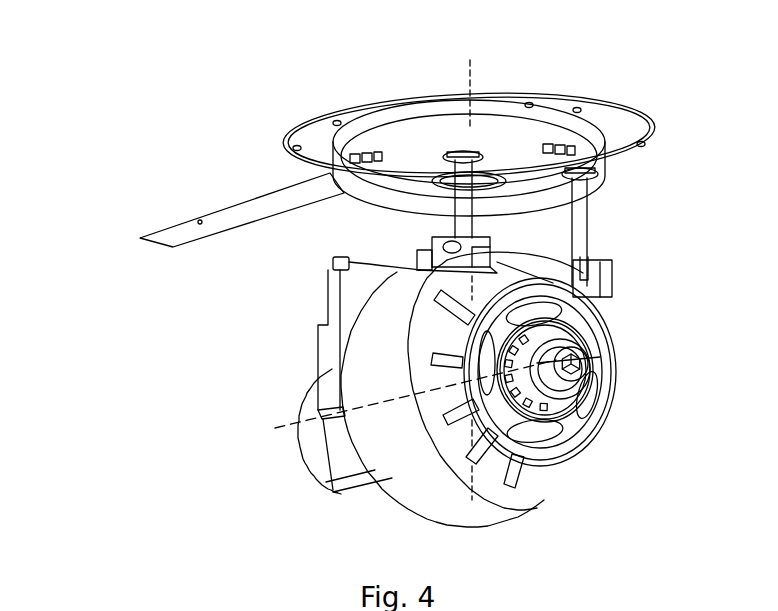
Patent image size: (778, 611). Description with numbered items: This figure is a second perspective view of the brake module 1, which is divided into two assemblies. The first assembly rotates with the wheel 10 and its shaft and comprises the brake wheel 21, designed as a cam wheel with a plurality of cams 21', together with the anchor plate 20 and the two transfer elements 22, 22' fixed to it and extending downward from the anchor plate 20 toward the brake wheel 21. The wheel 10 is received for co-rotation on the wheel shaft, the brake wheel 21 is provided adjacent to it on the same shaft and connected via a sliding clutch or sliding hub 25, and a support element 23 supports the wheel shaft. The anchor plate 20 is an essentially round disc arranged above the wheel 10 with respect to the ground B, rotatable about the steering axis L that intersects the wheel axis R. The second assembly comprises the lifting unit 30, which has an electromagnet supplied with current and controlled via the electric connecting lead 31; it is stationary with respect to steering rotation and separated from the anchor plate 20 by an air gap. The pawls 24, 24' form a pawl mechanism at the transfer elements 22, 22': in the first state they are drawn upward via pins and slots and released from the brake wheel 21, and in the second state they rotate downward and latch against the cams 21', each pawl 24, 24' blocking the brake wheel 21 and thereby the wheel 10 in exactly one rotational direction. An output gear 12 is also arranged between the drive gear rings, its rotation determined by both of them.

The brake module 1 is at (62, 71).
The wheel 10 is at (578, 460).
The output gear 12 is at (313, 464).
The anchor plate 20 is at (372, 202).
The brake wheel 21 is at (569, 377).
The cams 21' is at (590, 370).
The transfer element 22 is at (430, 153).
The transfer element 22' is at (615, 227).
The support element 23 is at (333, 290).
The pawl 24 is at (485, 254).
The pawl 24' is at (620, 270).
The sliding hub 25 is at (603, 376).
The lifting unit 30 is at (300, 140).
The electric connecting lead 31 is at (195, 221).